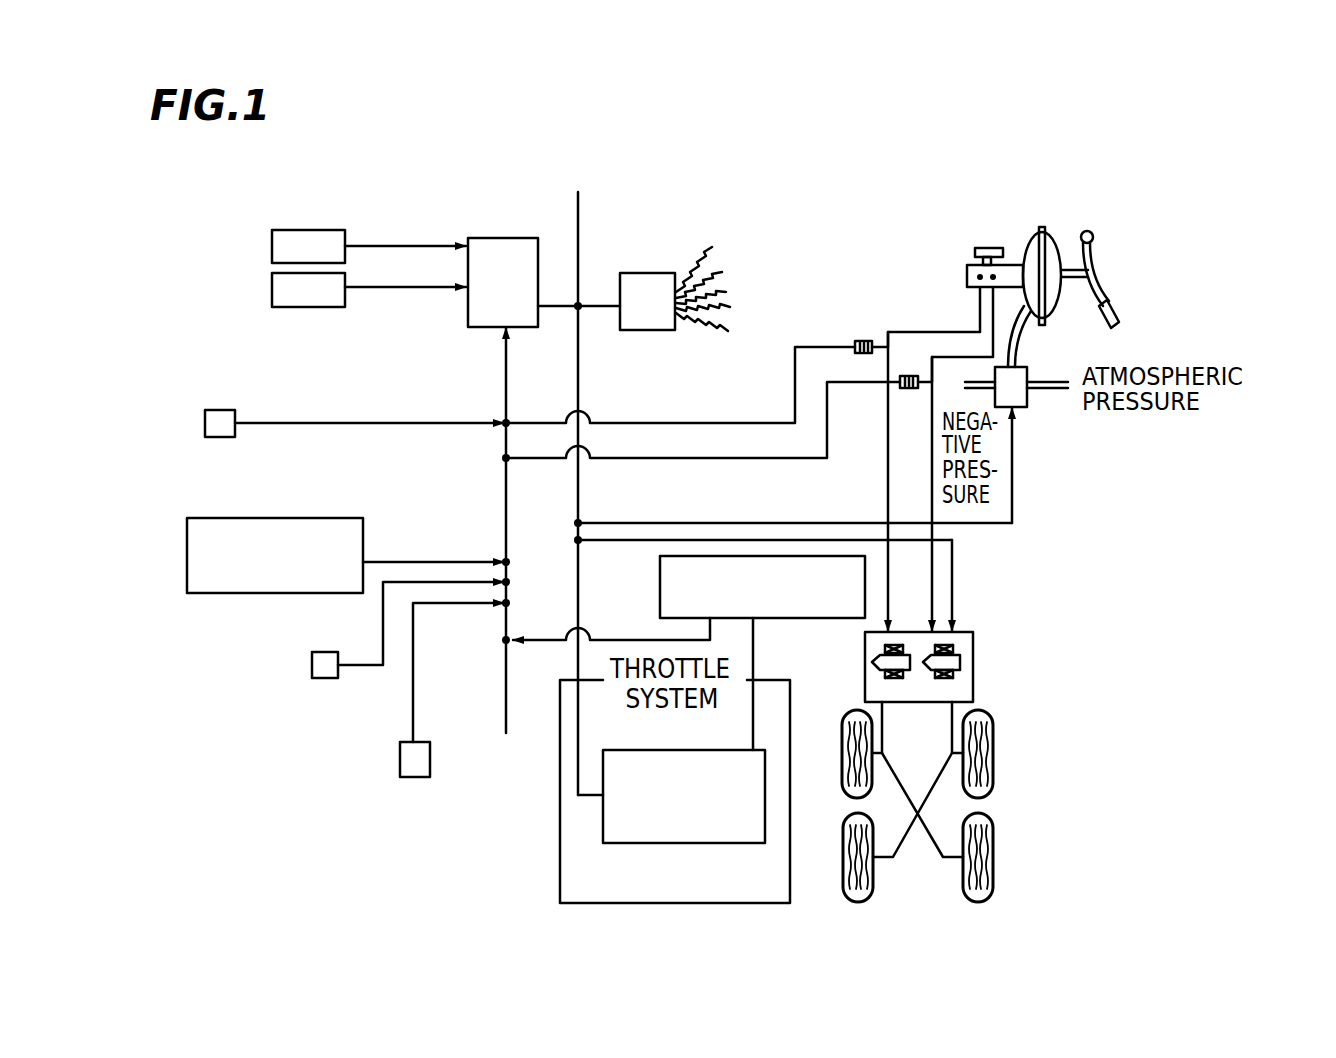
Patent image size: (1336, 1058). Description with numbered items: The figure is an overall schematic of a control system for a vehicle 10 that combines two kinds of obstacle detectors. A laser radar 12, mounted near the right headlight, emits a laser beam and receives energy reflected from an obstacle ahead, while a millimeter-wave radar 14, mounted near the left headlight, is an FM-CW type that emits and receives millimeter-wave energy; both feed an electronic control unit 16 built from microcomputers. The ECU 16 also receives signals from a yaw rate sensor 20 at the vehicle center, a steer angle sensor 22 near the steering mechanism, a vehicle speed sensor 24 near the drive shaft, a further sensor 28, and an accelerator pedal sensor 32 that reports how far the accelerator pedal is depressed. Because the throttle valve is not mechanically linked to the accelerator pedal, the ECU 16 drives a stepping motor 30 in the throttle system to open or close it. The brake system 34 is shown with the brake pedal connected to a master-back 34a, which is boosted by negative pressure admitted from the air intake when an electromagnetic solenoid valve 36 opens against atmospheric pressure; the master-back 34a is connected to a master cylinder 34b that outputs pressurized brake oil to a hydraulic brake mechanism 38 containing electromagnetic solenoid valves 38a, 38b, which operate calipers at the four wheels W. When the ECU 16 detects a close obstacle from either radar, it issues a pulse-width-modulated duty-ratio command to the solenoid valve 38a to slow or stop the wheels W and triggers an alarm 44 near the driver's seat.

The vehicle 10 is at (760, 200).
The laser radar 12 is at (272, 246).
The millimeter-wave radar 14 is at (272, 290).
The electronic control unit (ECU) 16 is at (528, 238).
The yaw rate sensor 20 is at (200, 593).
The steer angle sensor 22 is at (324, 678).
The vehicle speed sensor 24 is at (402, 777).
The brake pressure sensor 28 is at (215, 410).
The stepping motor 30 is at (603, 832).
The accelerator pedal sensor 32 is at (660, 598).
The brake system 34 is at (1134, 269).
The master-back 34a is at (1030, 250).
The master cylinder 34b is at (962, 246).
The electromagnetic solenoid valve 36 is at (1015, 397).
The hydraulic brake mechanism 38 is at (967, 635).
The electromagnetic solenoid valve 38a is at (955, 672).
The electromagnetic solenoid valve 38b is at (900, 679).
The alarm 44 is at (624, 280).
The wheels W is at (842, 758).